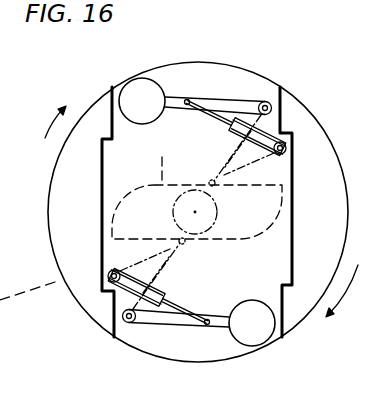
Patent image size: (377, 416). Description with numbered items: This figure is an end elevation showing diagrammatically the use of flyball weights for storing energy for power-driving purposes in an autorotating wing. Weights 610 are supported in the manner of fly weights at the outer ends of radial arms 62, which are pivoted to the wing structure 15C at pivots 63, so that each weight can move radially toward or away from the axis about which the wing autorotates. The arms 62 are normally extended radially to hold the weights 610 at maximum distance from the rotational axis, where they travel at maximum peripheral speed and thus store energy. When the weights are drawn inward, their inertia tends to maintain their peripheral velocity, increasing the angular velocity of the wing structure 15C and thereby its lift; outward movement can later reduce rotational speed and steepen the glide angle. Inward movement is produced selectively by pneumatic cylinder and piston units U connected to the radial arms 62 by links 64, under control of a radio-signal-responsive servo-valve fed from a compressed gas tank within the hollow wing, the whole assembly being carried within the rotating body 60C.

The rotating drum 60C is at (190, 63).
The weight 610 is at (138, 90).
The radial arm 62 is at (234, 103).
The pivot 63 is at (268, 101).
The link 64 is at (215, 113).
The unit U is at (263, 130).
The wing structure 15C is at (163, 160).